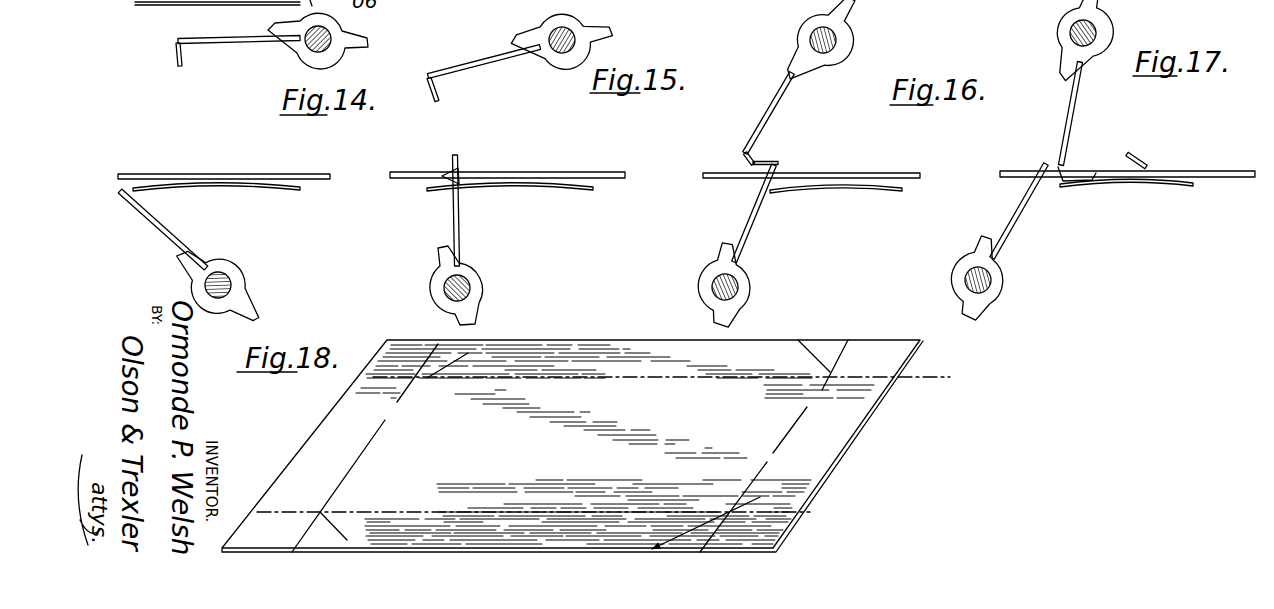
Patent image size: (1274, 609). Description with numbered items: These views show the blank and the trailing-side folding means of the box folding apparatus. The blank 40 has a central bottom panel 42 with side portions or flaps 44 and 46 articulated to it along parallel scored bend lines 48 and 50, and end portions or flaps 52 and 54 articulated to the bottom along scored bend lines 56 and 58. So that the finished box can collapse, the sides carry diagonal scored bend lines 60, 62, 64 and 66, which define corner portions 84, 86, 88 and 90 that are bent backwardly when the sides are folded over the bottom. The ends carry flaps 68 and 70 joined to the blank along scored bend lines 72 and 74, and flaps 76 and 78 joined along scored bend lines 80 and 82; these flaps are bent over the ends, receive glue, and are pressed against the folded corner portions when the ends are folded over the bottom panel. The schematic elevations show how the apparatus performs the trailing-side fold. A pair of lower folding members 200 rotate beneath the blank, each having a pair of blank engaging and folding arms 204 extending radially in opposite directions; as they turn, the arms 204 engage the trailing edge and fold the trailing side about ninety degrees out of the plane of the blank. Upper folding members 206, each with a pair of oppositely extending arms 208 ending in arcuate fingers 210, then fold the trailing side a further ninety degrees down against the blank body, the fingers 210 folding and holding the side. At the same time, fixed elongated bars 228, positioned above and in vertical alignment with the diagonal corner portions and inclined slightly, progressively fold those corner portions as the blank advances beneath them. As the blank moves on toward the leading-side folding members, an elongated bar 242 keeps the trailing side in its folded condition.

In FIG. 14, the box blank 40 is at (247, 192).
In FIG. 15, the box blank 40 is at (547, 193).
In FIG. 16, the box blank 40 is at (862, 199).
In FIG. 17, the box blank 40 is at (1141, 189).
In FIG. 18, the box blank 40 is at (885, 410).
In FIG. 14, the central bottom panel 42 is at (224, 181).
In FIG. 18, the central bottom panel 42 is at (833, 453).
In FIG. 14, the side portion or flap 44 is at (298, 183).
In FIG. 18, the side portion or flap 44 is at (575, 342).
In FIG. 14, the side portion or flap 46 is at (149, 186).
In FIG. 15, the side portion or flap 46 is at (463, 166).
In FIG. 18, the side portion or flap 46 is at (505, 545).
In FIG. 14, the scored bend line 48 is at (271, 190).
In FIG. 18, the scored bend line 48 is at (592, 378).
In FIG. 14, the scored bend line 50 is at (159, 190).
In FIG. 18, the scored bend line 50 is at (503, 511).
In FIG. 18, the end portion or flap 52 is at (833, 433).
In FIG. 18, the end portion or flap 54 is at (332, 433).
In FIG. 18, the scored bend line 56 is at (804, 410).
In FIG. 18, the scored bend line 58 is at (363, 453).
In FIG. 18, the diagonal scored bend line 60 is at (478, 345).
In FIG. 14, the diagonal scored bend line 62 is at (178, 5).
In FIG. 18, the diagonal scored bend line 62 is at (815, 357).
In FIG. 18, the diagonal scored bend line 64 is at (330, 541).
In FIG. 18, the diagonal scored bend line 66 is at (686, 530).
In FIG. 18, the flap 68 is at (925, 348).
In FIG. 14, the flap 70 is at (99, 15).
In FIG. 18, the flap 70 is at (780, 537).
In FIG. 18, the scored bend line 72 is at (868, 374).
In FIG. 18, the scored bend line 74 is at (770, 510).
In FIG. 18, the flap 76 is at (393, 338).
In FIG. 18, the flap 78 is at (250, 549).
In FIG. 18, the scored bend line 80 is at (376, 377).
In FIG. 18, the scored bend line 82 is at (270, 510).
In FIG. 18, the corner portion 84 is at (455, 346).
In FIG. 18, the corner portion 86 is at (842, 340).
In FIG. 15, the corner portion 88 is at (447, 170).
In FIG. 18, the corner portion 88 is at (305, 545).
In FIG. 18, the corner portion 90 is at (702, 531).
In FIG. 14, the lower folding member 200 is at (227, 260).
In FIG. 16, the lower folding member 200 is at (759, 279).
In FIG. 14, the blank engaging and folding arm 204 is at (157, 226).
In FIG. 15, the blank engaging and folding arm 204 is at (460, 213).
In FIG. 16, the blank engaging and folding arm 204 is at (761, 216).
In FIG. 17, the blank engaging and folding arm 204 is at (1021, 228).
In FIG. 14, the upper folding member 206 is at (306, 64).
In FIG. 15, the upper folding member 206 is at (562, 67).
In FIG. 16, the upper folding member 206 is at (846, 61).
In FIG. 17, the upper folding member 206 is at (1119, 28).
In FIG. 15, the arm 208 is at (465, 68).
In FIG. 16, the arm 208 is at (778, 100).
In FIG. 17, the arm 208 is at (1066, 115).
In FIG. 15, the arcuate finger 210 is at (441, 95).
In FIG. 17, the arcuate finger 210 is at (1072, 164).
In FIG. 15, the fixed elongated folding bar 228 is at (617, 172).
In FIG. 16, the fixed elongated folding bar 228 is at (907, 172).
In FIG. 17, the elongated bar 242 is at (1190, 165).